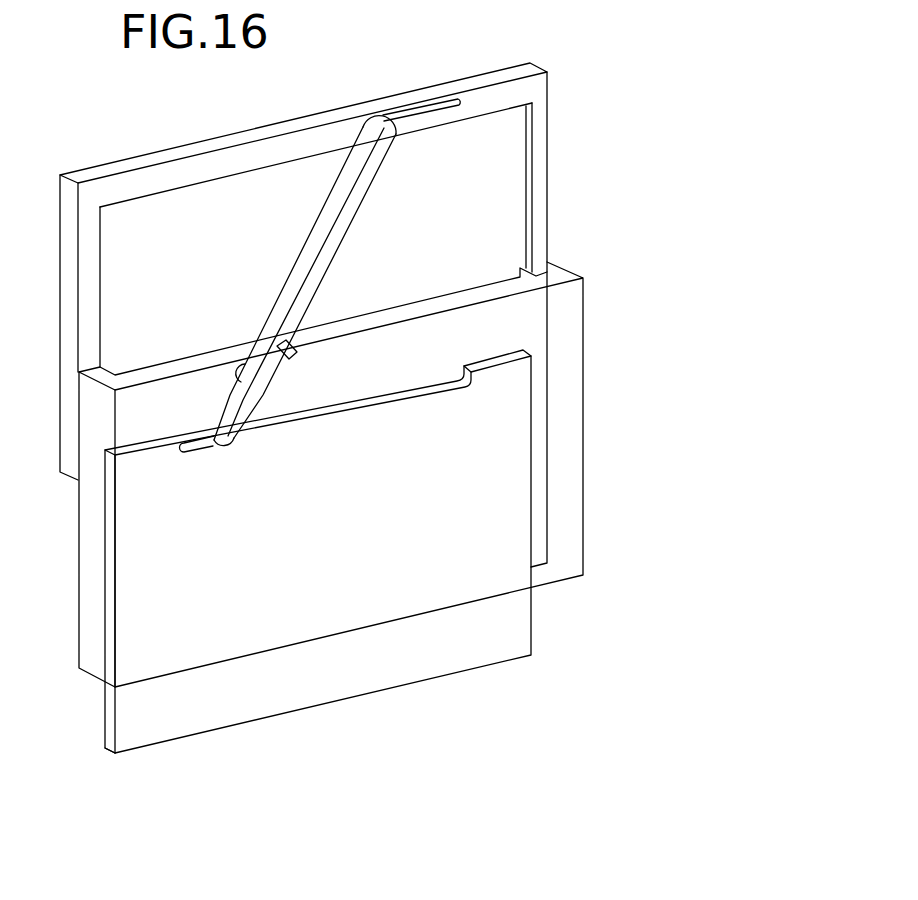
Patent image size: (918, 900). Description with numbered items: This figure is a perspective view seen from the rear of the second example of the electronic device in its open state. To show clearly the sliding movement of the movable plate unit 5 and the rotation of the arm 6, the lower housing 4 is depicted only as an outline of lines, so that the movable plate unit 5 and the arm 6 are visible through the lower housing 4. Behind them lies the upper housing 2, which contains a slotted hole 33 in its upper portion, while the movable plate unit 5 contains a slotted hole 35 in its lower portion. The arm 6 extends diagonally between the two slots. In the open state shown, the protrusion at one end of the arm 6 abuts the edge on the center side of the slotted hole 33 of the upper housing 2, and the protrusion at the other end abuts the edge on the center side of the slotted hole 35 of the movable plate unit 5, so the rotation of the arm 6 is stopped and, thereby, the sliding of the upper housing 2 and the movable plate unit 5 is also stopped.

The upper housing 2 is at (539, 63).
The lower housing 4 is at (574, 271).
The movable plate unit 5 is at (533, 619).
The arm 6 is at (343, 182).
The slotted hole 33 is at (400, 110).
The slotted hole 35 is at (183, 453).